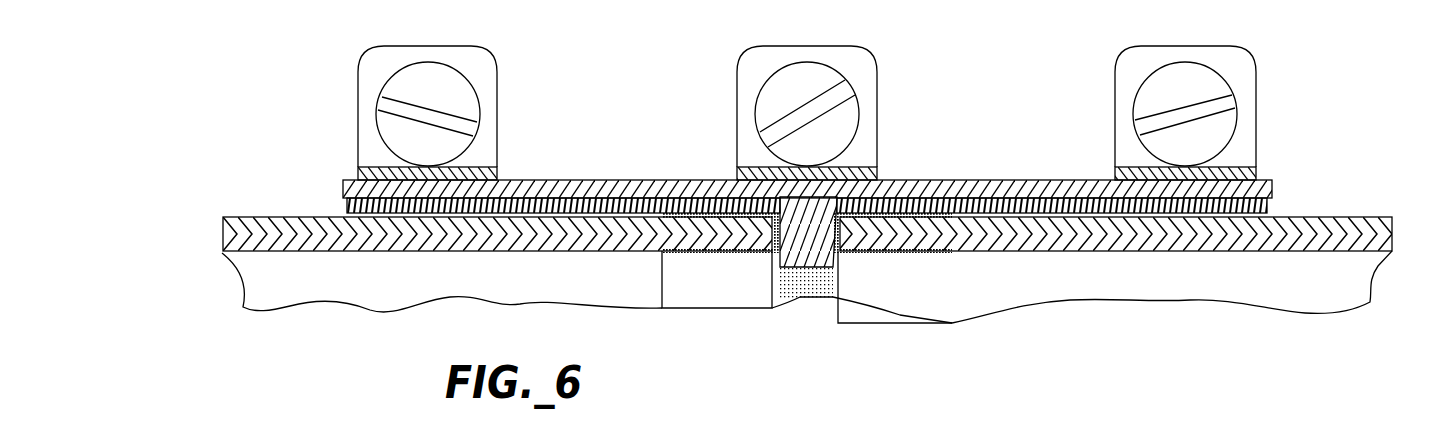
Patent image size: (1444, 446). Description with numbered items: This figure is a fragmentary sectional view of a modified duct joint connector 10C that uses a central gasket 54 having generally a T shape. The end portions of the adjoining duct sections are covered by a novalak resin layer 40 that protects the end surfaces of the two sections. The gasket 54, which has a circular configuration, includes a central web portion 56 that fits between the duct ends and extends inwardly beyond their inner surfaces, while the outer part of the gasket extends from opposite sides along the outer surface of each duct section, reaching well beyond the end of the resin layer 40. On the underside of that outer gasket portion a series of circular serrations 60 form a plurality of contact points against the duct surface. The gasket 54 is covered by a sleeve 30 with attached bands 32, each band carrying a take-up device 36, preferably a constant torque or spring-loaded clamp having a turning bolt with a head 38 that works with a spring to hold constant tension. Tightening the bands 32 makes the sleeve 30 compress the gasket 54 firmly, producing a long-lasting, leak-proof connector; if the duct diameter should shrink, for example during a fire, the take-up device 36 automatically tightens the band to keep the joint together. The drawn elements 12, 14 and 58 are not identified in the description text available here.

The joint connector 10C is at (900, 77).
The substrate 12 is at (305, 217).
The support base 14 is at (1362, 215).
The sleeve 30 is at (663, 180).
The bands 32 is at (1258, 175).
The take-up device 36 is at (1258, 98).
The head 38 is at (1200, 72).
The novalak resin layer 40 is at (660, 252).
The central gasket 54 is at (343, 211).
The central web portion 56 is at (780, 262).
The metallization layer 58 is at (1273, 205).
The circular serrations 60 is at (1003, 195).